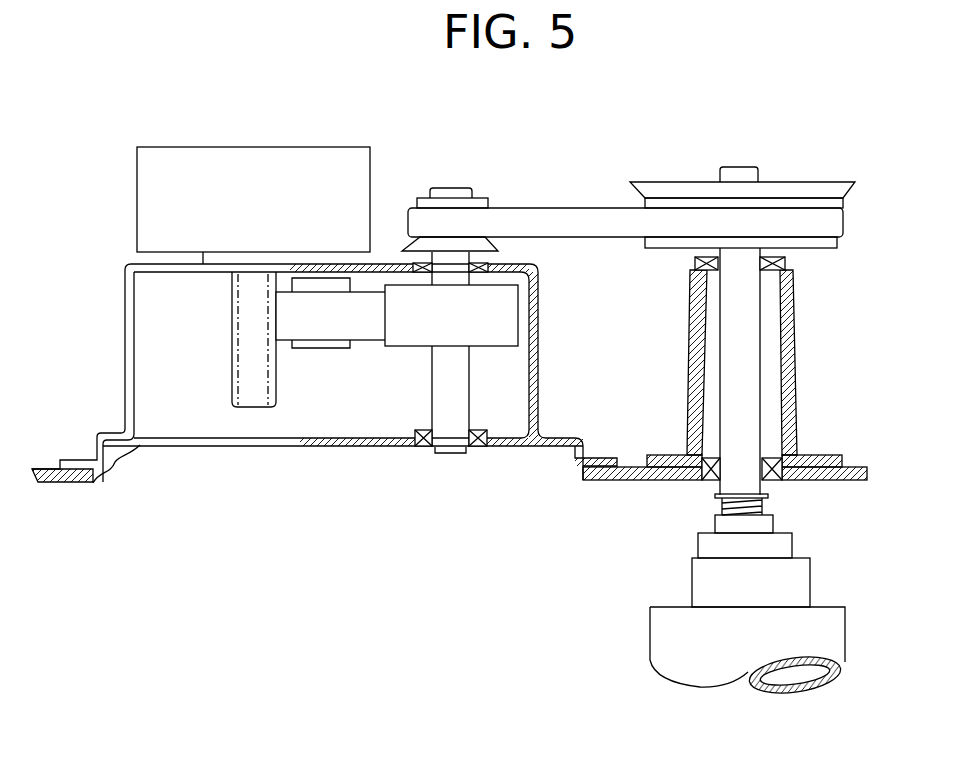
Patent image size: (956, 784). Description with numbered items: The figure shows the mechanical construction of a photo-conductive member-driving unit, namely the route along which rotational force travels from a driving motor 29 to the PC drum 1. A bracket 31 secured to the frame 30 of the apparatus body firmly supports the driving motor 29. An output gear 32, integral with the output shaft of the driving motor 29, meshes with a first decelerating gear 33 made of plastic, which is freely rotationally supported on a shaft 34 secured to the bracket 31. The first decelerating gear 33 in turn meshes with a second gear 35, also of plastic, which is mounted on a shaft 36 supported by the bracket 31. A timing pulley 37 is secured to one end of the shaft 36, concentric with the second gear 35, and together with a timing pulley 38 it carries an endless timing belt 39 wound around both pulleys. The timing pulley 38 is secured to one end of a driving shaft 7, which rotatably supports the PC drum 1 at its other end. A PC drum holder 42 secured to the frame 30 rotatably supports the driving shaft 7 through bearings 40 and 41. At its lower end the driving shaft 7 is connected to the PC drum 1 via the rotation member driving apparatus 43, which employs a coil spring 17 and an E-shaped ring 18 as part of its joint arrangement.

The PC drum 1 is at (838, 637).
The driving shaft 7 is at (750, 332).
The coil spring 17 is at (765, 512).
The E-shaped ring 18 is at (770, 496).
The driving motor 29 is at (258, 147).
The frame 30 is at (615, 480).
The bracket 31 is at (125, 336).
The output gear 32 is at (232, 350).
The first decelerating gear 33 is at (310, 332).
The shaft 34 is at (337, 286).
The second gear 35 is at (498, 337).
The shaft 36 is at (455, 453).
The timing pulley 37 is at (490, 198).
The timing pulley 38 is at (815, 182).
The endless timing belt 39 is at (581, 208).
The bearing 40 is at (695, 263).
The bearing 41 is at (715, 455).
The PC drum holder 42 is at (790, 398).
The rotation member driving apparatus 43 is at (650, 553).